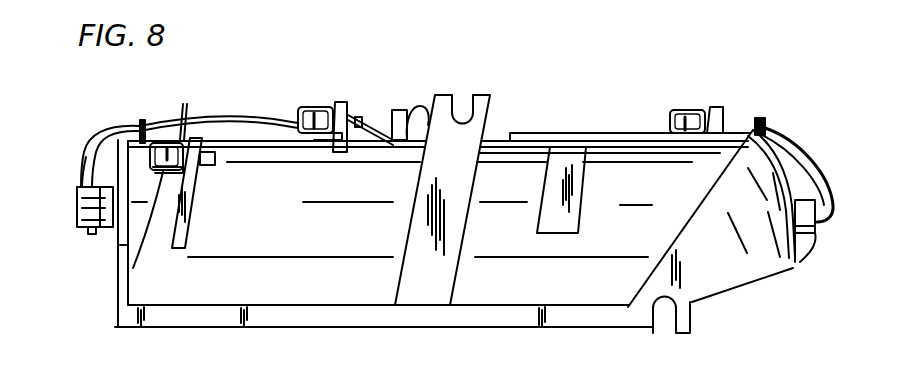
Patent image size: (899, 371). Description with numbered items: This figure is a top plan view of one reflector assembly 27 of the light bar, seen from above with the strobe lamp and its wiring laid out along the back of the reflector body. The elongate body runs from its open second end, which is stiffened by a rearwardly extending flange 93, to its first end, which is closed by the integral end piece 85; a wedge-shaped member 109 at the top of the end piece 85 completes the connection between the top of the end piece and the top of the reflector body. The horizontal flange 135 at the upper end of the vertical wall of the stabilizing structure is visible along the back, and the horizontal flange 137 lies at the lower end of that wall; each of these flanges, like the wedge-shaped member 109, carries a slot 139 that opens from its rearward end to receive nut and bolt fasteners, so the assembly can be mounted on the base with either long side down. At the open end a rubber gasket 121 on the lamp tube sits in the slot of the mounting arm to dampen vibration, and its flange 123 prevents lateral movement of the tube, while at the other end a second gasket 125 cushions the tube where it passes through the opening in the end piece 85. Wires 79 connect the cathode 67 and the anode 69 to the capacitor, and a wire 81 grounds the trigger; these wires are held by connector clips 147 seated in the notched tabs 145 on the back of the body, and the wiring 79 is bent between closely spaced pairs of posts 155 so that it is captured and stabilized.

The reflector assembly 27 is at (589, 46).
The cathode 67 is at (86, 157).
The anode 69 is at (806, 240).
The wires 79 is at (120, 133).
The wire 81 is at (185, 103).
The end piece 85 is at (792, 270).
The flange 93 is at (128, 283).
The wedge-shaped member 109 is at (640, 322).
The gasket 121 is at (77, 210).
The flange 123 is at (110, 233).
The gasket 125 is at (800, 140).
The horizontal flange 135 is at (490, 122).
The horizontal flange 137 is at (420, 106).
The slot 139 is at (466, 96).
The tab 145 is at (352, 107).
The connector clip 147 is at (358, 112).
The posts 155 is at (757, 106).